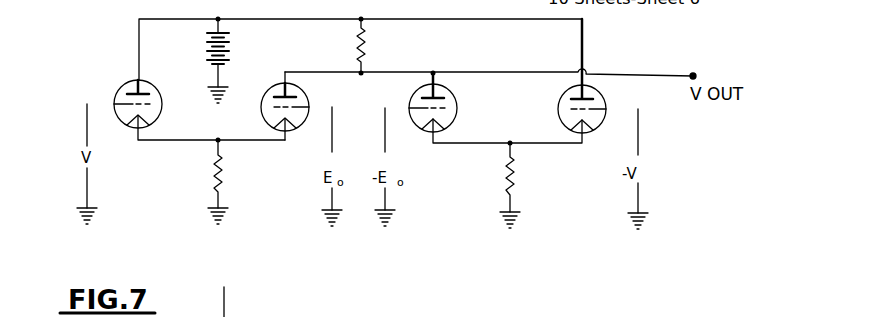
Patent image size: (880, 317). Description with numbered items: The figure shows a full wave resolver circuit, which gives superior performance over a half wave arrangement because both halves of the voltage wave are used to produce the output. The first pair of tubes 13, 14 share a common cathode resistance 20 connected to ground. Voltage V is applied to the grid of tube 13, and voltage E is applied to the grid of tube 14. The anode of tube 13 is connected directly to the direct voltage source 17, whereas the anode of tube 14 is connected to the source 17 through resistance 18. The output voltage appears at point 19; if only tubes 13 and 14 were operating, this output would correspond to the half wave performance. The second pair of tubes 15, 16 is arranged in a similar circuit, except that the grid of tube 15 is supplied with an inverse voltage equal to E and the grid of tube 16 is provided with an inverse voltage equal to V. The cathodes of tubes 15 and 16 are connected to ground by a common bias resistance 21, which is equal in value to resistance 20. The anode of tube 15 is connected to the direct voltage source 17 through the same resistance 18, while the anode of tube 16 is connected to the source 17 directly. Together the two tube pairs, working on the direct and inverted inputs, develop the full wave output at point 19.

The tube 13 is at (122, 84).
The tube 14 is at (308, 98).
The tube 15 is at (456, 104).
The tube 16 is at (563, 96).
The direct voltage source 17 is at (228, 53).
The resistance 18 is at (366, 57).
The point 19 is at (693, 73).
The common cathode resistance 20 is at (223, 174).
The common bias resistance 21 is at (518, 180).